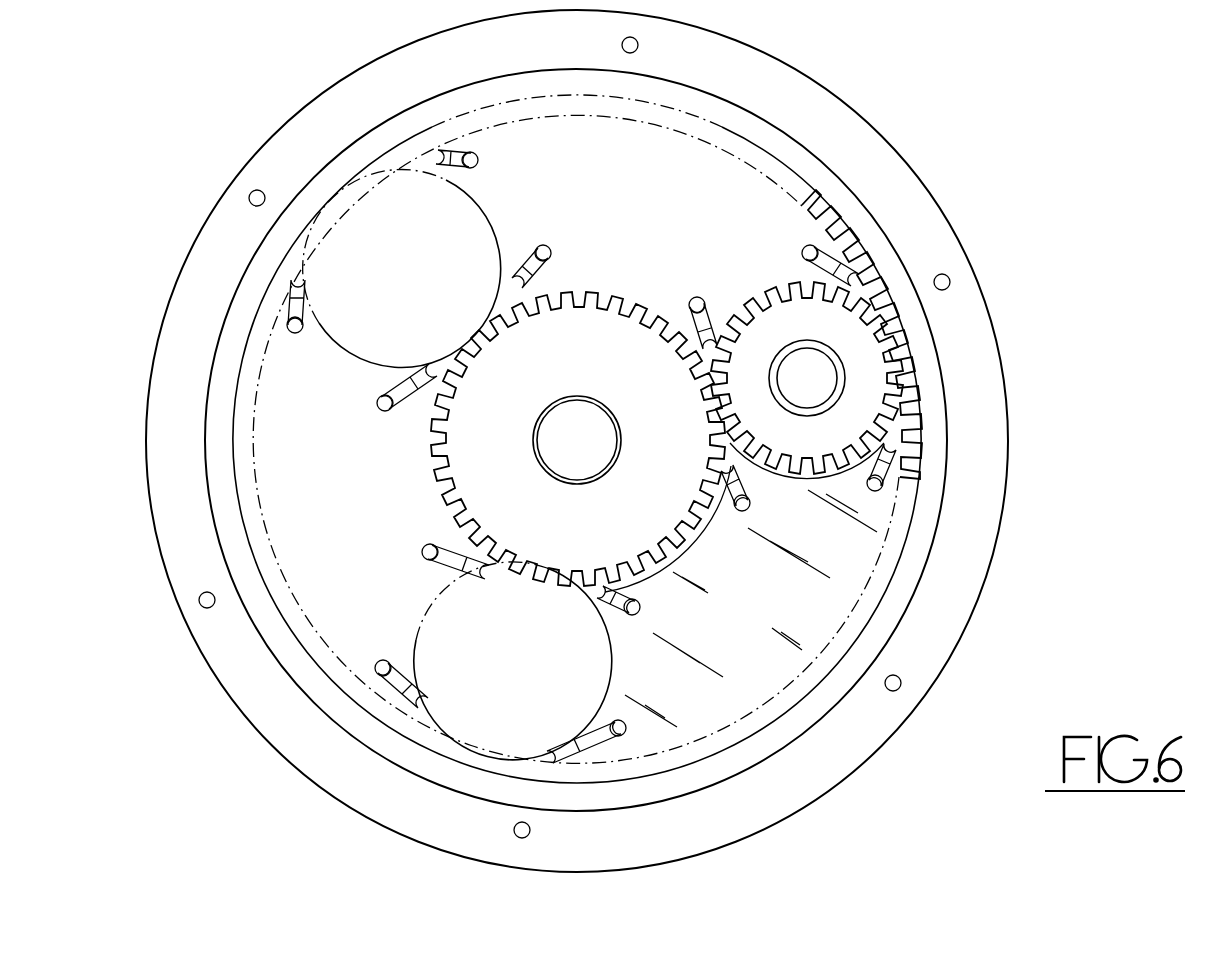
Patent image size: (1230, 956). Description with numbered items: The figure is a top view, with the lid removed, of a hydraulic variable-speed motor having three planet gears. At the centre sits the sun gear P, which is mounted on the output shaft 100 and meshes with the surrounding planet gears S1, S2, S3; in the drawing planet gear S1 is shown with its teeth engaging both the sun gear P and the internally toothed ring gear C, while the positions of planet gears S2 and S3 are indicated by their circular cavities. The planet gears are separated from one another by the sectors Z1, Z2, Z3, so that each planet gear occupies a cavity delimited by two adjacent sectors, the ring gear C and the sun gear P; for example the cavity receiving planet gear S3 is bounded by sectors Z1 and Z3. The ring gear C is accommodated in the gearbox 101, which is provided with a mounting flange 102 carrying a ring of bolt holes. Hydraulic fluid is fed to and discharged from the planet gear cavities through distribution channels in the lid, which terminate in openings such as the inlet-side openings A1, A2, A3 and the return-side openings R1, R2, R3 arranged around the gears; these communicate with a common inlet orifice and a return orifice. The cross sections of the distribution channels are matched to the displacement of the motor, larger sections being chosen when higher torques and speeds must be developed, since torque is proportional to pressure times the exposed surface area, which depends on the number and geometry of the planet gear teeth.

The ring gear C is at (875, 272).
The sun gear P is at (600, 443).
The planet gear S1 is at (800, 346).
The planet gear S2 is at (380, 291).
The planet gear S3 is at (468, 683).
The output shaft 100 is at (560, 456).
The gearbox 101 is at (952, 596).
The mounting flange 102 is at (901, 684).
The sector Z1 is at (757, 623).
The sector Z2 is at (660, 226).
The sector Z3 is at (360, 514).
The inlet opening A1 is at (818, 256).
The inlet opening A2 is at (300, 325).
The inlet opening A3 is at (620, 734).
The return opening R1 is at (704, 283).
The return opening R2 is at (383, 408).
The return opening R3 is at (630, 575).